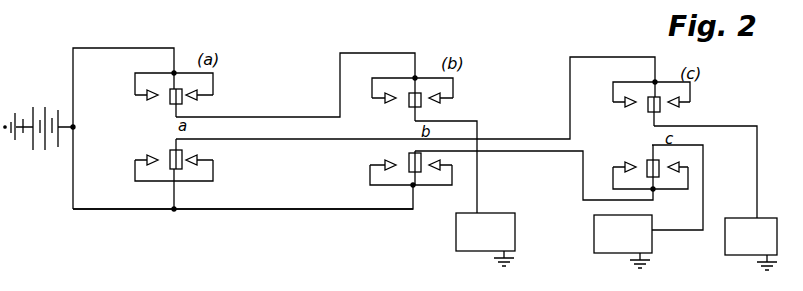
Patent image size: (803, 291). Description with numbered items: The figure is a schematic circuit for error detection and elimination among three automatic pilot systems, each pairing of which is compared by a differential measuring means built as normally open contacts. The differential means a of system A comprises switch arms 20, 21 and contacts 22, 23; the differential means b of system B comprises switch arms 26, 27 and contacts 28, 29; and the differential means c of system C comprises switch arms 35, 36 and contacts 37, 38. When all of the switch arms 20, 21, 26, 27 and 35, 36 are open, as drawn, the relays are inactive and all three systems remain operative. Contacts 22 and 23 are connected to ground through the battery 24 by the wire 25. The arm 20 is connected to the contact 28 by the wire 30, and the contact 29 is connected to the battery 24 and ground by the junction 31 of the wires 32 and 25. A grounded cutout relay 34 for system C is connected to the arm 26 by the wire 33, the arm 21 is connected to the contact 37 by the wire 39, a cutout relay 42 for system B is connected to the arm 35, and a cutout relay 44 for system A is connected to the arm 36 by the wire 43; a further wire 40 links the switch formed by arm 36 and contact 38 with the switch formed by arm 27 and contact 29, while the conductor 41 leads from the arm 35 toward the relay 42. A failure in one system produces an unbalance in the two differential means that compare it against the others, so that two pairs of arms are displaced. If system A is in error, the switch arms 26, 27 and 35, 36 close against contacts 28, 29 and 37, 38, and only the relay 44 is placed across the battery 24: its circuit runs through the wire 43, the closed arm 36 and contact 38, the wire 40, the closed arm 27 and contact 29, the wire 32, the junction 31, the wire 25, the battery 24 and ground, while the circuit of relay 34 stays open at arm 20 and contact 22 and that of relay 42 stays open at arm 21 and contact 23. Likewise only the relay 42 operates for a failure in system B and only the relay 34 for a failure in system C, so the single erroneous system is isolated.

The switch arm 20 is at (170, 104).
The switch arm 21 is at (184, 157).
The contact 22 is at (160, 89).
The contact 23 is at (153, 153).
The battery 24 is at (43, 151).
The wire 25 is at (102, 49).
The switch arm 26 is at (410, 108).
The switch arm 27 is at (409, 170).
The contact 28 is at (389, 103).
The contact 29 is at (389, 160).
The wire 30 is at (270, 117).
The junction 31 is at (171, 212).
The wire 32 is at (262, 209).
The wire 33 is at (477, 196).
The cutout relay 34 is at (456, 235).
The switch arm 35 is at (647, 113).
The switch arm 36 is at (645, 162).
The contact 37 is at (676, 105).
The contact 38 is at (625, 165).
The wire 39 is at (568, 74).
The wire 40 is at (510, 152).
The conductor to relay B 41 is at (757, 165).
The cutout relay 42 is at (745, 218).
The wire 43 is at (682, 226).
The cutout relay 44 is at (594, 236).